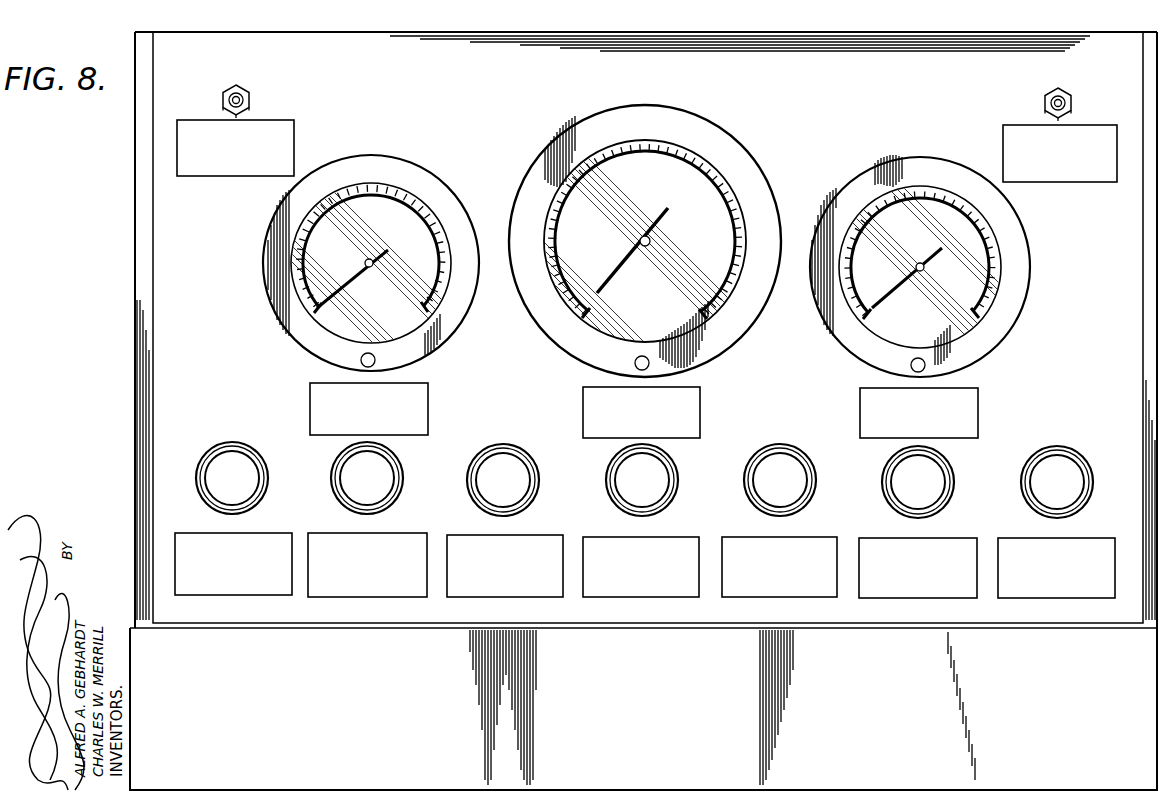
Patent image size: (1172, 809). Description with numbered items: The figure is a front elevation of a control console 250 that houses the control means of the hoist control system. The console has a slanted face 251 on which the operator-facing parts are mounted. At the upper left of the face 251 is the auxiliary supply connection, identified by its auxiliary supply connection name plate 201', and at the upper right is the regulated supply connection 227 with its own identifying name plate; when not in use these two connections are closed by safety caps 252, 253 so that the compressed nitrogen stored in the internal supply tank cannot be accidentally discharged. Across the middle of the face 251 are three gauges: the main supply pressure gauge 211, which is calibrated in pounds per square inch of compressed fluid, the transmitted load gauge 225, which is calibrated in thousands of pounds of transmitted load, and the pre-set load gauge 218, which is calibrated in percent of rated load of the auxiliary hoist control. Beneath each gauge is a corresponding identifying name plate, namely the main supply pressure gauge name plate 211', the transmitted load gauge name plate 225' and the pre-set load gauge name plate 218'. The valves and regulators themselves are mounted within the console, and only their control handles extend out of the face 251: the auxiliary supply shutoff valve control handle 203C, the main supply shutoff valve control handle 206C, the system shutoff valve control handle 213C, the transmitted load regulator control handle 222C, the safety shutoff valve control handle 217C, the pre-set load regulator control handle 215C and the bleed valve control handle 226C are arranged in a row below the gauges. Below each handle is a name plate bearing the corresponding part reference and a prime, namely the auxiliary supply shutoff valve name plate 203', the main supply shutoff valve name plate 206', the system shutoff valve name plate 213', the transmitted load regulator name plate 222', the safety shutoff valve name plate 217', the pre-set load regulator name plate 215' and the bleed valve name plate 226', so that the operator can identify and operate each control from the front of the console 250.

The control console 250 is at (112, 335).
The slanted face 251 is at (163, 263).
The safety cap 252 is at (1043, 102).
The safety cap 253 is at (249, 90).
The auxiliary supply connection name plate 201' is at (266, 144).
The regulated supply connection 227 is at (1090, 125).
The main supply pressure gauge 211 is at (371, 252).
The transmitted load gauge 225 is at (645, 244).
The pre-set load gauge 218 is at (917, 256).
The main supply pressure gauge name plate 211' is at (398, 409).
The transmitted load gauge name plate 225' is at (674, 411).
The pre-set load gauge name plate 218' is at (958, 412).
The auxiliary supply shutoff valve control handle 203C is at (232, 442).
The main supply shutoff valve control handle 206C is at (402, 470).
The system shutoff valve control handle 213C is at (538, 473).
The transmitted load regulator control handle 222C is at (677, 472).
The safety shutoff valve control handle 217C is at (815, 472).
The pre-set load regulator control handle 215C is at (953, 472).
The bleed valve control handle 226C is at (1083, 452).
The auxiliary supply shutoff valve name plate 203' is at (239, 551).
The main supply shutoff valve name plate 206' is at (371, 552).
The system shutoff valve name plate 213' is at (513, 552).
The transmitted load regulator name plate 222' is at (648, 552).
The safety shutoff valve name plate 217' is at (787, 552).
The pre-set load regulator name plate 215' is at (924, 553).
The bleed valve name plate 226' is at (1059, 553).